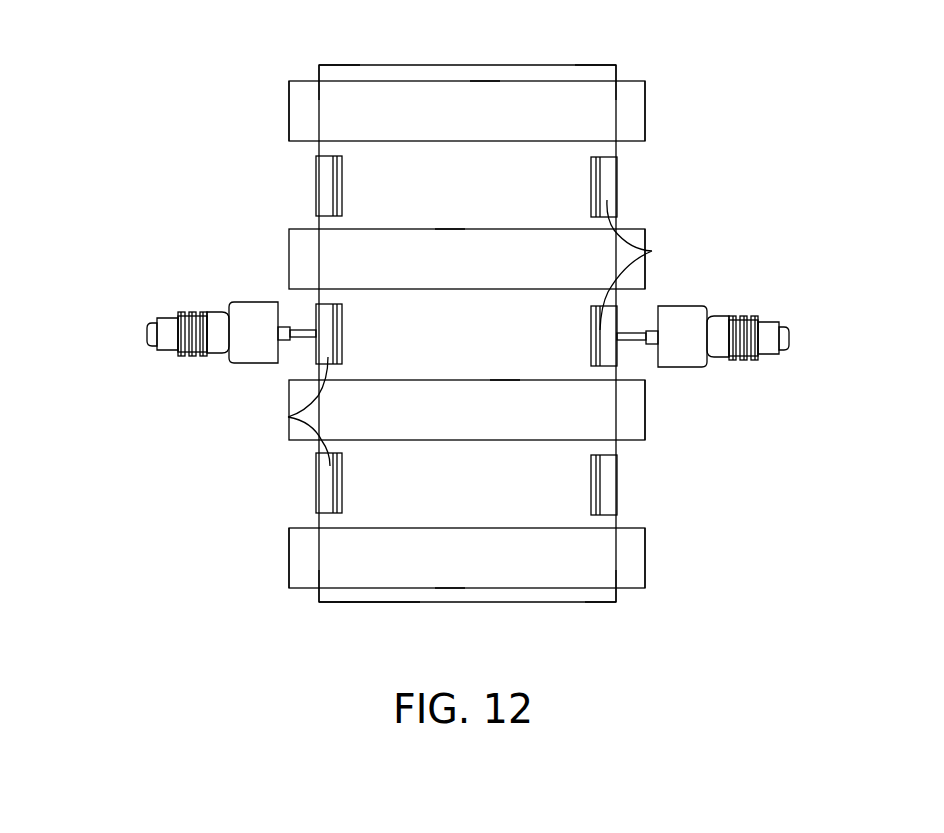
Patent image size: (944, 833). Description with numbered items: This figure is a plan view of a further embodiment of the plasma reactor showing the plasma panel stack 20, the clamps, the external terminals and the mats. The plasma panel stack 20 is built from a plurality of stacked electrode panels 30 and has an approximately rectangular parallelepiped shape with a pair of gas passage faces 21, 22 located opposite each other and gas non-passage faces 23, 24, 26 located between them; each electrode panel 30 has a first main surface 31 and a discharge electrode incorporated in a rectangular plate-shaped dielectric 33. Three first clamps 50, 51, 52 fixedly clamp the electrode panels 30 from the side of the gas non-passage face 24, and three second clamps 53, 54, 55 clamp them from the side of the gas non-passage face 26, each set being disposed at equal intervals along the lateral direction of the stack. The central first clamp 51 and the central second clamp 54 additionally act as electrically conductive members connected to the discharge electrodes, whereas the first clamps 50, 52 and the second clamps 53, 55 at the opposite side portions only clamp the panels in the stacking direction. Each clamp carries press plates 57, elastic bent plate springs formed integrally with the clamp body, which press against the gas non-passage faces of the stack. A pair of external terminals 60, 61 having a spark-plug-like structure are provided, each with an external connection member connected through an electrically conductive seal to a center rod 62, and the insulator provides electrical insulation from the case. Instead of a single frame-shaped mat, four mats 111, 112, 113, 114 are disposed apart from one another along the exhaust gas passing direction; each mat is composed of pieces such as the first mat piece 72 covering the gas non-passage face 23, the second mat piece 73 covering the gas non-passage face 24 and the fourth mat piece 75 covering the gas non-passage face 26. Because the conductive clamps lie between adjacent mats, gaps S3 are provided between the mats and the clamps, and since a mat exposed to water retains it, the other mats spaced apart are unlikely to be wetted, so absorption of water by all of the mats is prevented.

The plasma panel stack 20 is at (617, 65).
The gas passage face 21 is at (361, 614).
The gas passage face 22 is at (532, 61).
The gas non-passage face 23 is at (367, 64).
The gas non-passage face 24 is at (630, 607).
The gas non-passage face 26 is at (304, 595).
The electrode panel 30 is at (443, 78).
The first main surface 31 is at (482, 346).
The dielectric 33 is at (547, 598).
The first clamp 50 is at (591, 486).
The first clamp 51 is at (591, 334).
The first clamp 52 is at (591, 186).
The second clamp 53 is at (343, 484).
The second clamp 54 is at (343, 334).
The second clamp 55 is at (343, 186).
The press plate 57 is at (330, 186).
The external terminal 60 is at (789, 339).
The external terminal 61 is at (147, 334).
The center rod 62 is at (301, 338).
The first mat piece 72 is at (487, 88).
The second mat piece 73 is at (636, 124).
The fourth mat piece 75 is at (297, 113).
The mat 111 is at (647, 547).
The mat 112 is at (645, 410).
The mat 113 is at (289, 261).
The mat 114 is at (647, 100).
The gap S3 is at (349, 139).